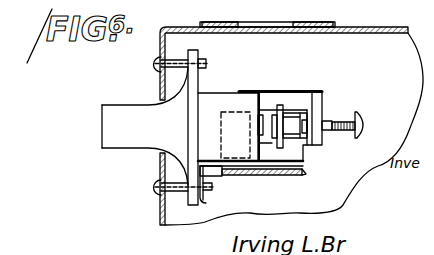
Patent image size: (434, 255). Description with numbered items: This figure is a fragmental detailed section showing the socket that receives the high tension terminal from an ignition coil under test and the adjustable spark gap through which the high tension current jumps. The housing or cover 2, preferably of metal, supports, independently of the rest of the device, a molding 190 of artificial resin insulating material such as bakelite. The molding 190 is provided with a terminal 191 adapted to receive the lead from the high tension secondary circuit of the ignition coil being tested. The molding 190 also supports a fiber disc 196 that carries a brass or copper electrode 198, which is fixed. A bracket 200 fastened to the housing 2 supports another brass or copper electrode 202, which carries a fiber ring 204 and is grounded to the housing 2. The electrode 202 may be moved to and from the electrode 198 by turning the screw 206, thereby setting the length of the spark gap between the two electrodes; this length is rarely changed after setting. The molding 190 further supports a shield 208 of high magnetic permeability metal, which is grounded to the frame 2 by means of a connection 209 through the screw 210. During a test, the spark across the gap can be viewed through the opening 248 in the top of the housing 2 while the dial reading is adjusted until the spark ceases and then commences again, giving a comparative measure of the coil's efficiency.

The housing 2 is at (160, 43).
The opening 248 is at (280, 25).
The terminal 191 is at (117, 115).
The molding 190 is at (186, 156).
The screw 210 is at (157, 191).
The fiber disc 196 is at (250, 102).
The electrode 198 is at (258, 122).
The bracket 200 is at (322, 99).
The electrode 202 is at (273, 115).
The fiber ring 204 is at (280, 106).
The screw 206 is at (362, 117).
The shield 208 is at (335, 170).
The connection 209 is at (204, 203).